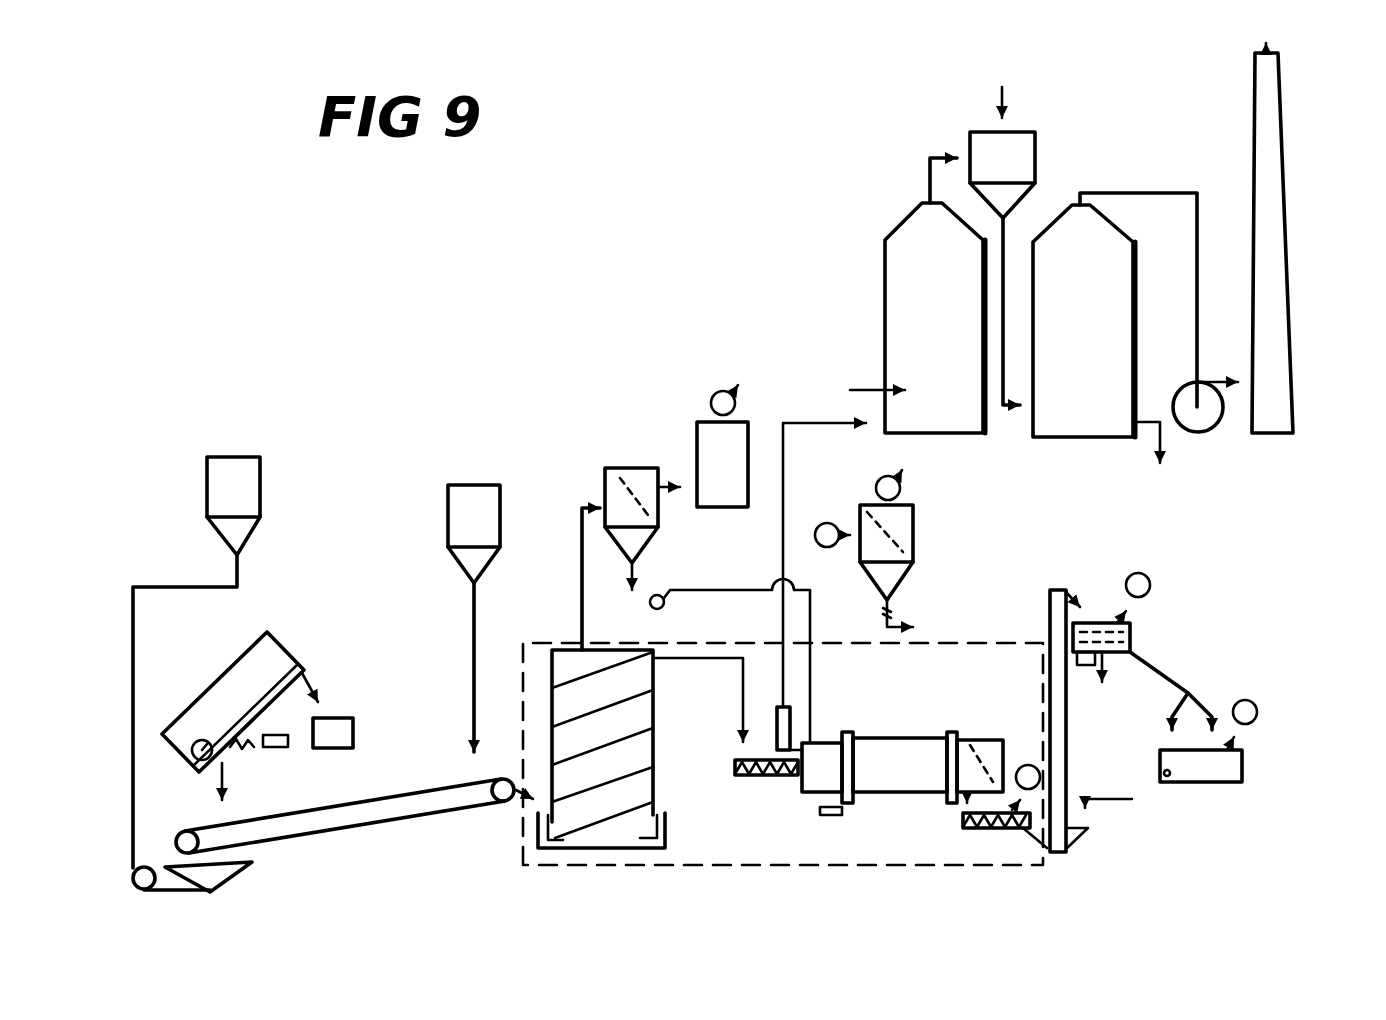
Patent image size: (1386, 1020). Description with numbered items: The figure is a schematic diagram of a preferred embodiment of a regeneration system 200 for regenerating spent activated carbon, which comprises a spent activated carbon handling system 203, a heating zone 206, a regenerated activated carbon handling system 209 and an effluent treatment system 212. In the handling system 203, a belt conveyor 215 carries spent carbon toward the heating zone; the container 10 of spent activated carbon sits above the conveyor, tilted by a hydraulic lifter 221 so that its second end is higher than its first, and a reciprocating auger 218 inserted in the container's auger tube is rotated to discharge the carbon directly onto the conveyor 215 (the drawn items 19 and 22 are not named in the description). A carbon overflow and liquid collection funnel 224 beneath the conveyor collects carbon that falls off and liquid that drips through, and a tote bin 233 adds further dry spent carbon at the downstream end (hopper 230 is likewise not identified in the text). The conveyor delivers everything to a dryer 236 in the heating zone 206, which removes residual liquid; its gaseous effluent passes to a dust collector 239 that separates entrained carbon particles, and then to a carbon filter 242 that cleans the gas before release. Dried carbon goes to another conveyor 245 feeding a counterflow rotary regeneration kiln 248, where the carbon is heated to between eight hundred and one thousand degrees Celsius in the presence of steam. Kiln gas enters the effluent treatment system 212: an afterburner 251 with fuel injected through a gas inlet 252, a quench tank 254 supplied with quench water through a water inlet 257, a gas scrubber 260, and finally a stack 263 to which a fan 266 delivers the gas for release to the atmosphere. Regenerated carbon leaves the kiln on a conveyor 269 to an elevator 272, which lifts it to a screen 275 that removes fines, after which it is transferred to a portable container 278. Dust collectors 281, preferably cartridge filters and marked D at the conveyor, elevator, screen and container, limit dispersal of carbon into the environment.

The container 10 is at (232, 703).
The motor 19 is at (172, 745).
The discharge outlet 22 is at (283, 637).
The regeneration system 200 is at (388, 252).
The spent activated carbon handling system 203 is at (474, 876).
The heating zone 206 is at (772, 847).
The regenerated activated carbon handling system 209 is at (1199, 581).
The effluent treatment system 212 is at (801, 222).
The belt conveyor 215 is at (400, 820).
The reciprocating auger 218 is at (253, 746).
The hydraulic lifter 221 is at (353, 740).
The carbon overflow and liquid collection funnel 224 is at (233, 873).
The additive hopper 230 is at (222, 500).
The tote bin 233 is at (463, 535).
The dryer 236 is at (585, 747).
The dust collector 239 is at (628, 465).
The carbon filter 242 is at (710, 476).
The conveyor 245 is at (758, 778).
The counterflow rotary regeneration kiln 248 is at (890, 780).
The afterburner 251 is at (920, 318).
The gas inlet 252 is at (860, 388).
The quench tank 254 is at (990, 184).
The water inlet 257 is at (1010, 107).
The gas scrubber 260 is at (1060, 333).
The stack 263 is at (1286, 262).
The fan 266 is at (1200, 427).
The conveyor 269 is at (998, 830).
The elevator 272 is at (1043, 670).
The screen 275 is at (1130, 630).
The portable container 278 is at (1200, 783).
The dust collectors 281 is at (913, 522).